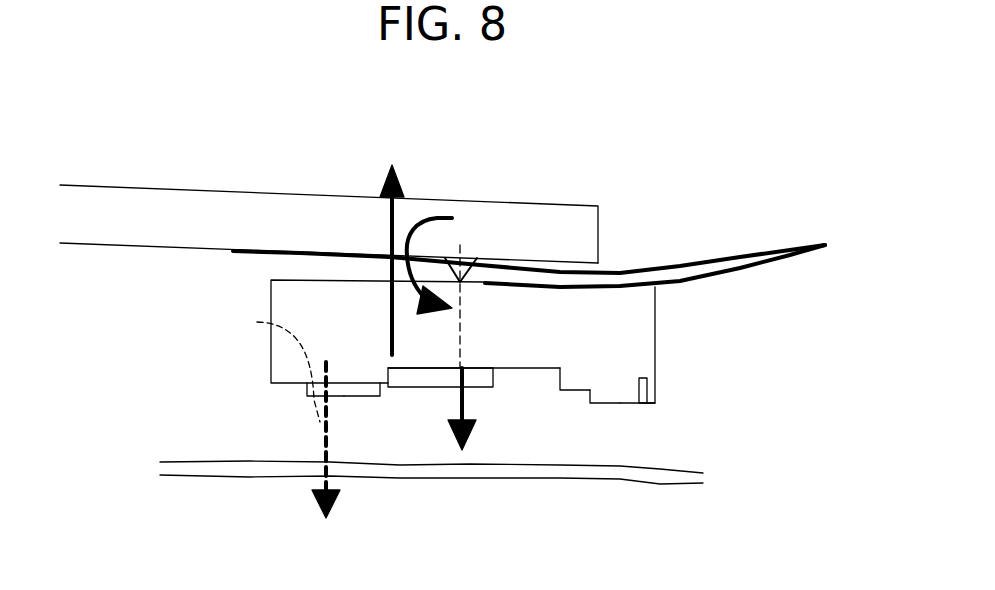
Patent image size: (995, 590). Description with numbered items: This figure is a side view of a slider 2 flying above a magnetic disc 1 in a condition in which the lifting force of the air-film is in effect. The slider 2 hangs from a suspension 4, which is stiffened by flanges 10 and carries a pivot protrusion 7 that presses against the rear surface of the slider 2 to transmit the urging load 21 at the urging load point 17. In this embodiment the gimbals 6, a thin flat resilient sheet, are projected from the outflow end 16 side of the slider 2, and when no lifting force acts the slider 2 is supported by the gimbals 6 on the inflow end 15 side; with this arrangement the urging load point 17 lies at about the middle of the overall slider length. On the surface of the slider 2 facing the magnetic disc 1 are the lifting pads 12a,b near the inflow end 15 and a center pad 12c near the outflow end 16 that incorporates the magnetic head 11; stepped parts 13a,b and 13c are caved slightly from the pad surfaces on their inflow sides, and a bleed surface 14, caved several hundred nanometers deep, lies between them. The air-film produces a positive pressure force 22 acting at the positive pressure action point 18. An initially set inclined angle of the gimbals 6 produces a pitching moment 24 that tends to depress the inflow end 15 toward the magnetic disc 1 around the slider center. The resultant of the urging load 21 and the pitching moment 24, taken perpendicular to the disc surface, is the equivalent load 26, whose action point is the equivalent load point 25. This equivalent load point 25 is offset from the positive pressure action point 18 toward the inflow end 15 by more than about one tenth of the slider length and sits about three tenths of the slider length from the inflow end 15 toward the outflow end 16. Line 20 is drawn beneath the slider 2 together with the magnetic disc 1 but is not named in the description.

The magnetic disc 1 is at (198, 492).
The slider 2 is at (425, 343).
The suspension 4 is at (162, 242).
The gimbals 6 is at (660, 268).
The pivot protrusion 7 is at (465, 262).
The flanges 10 is at (152, 197).
The magnetic head 11 is at (650, 390).
The lifting pads 12a,b is at (362, 397).
The center pad 12c is at (620, 405).
The stepped parts 13a,b is at (284, 388).
The stepped part 13c is at (565, 393).
The bleed surface 14 is at (523, 373).
The inflow end 15 is at (270, 386).
The outflow end 16 is at (653, 405).
The urging load point 17 is at (463, 367).
The positive pressure action point 18 is at (387, 366).
The circuit board 20 is at (192, 466).
The urging load 21 is at (468, 455).
The positive pressure force 22 is at (397, 168).
The pitching moment 24 is at (437, 214).
The equivalent load point 25 is at (326, 360).
The equivalent load 26 is at (270, 363).